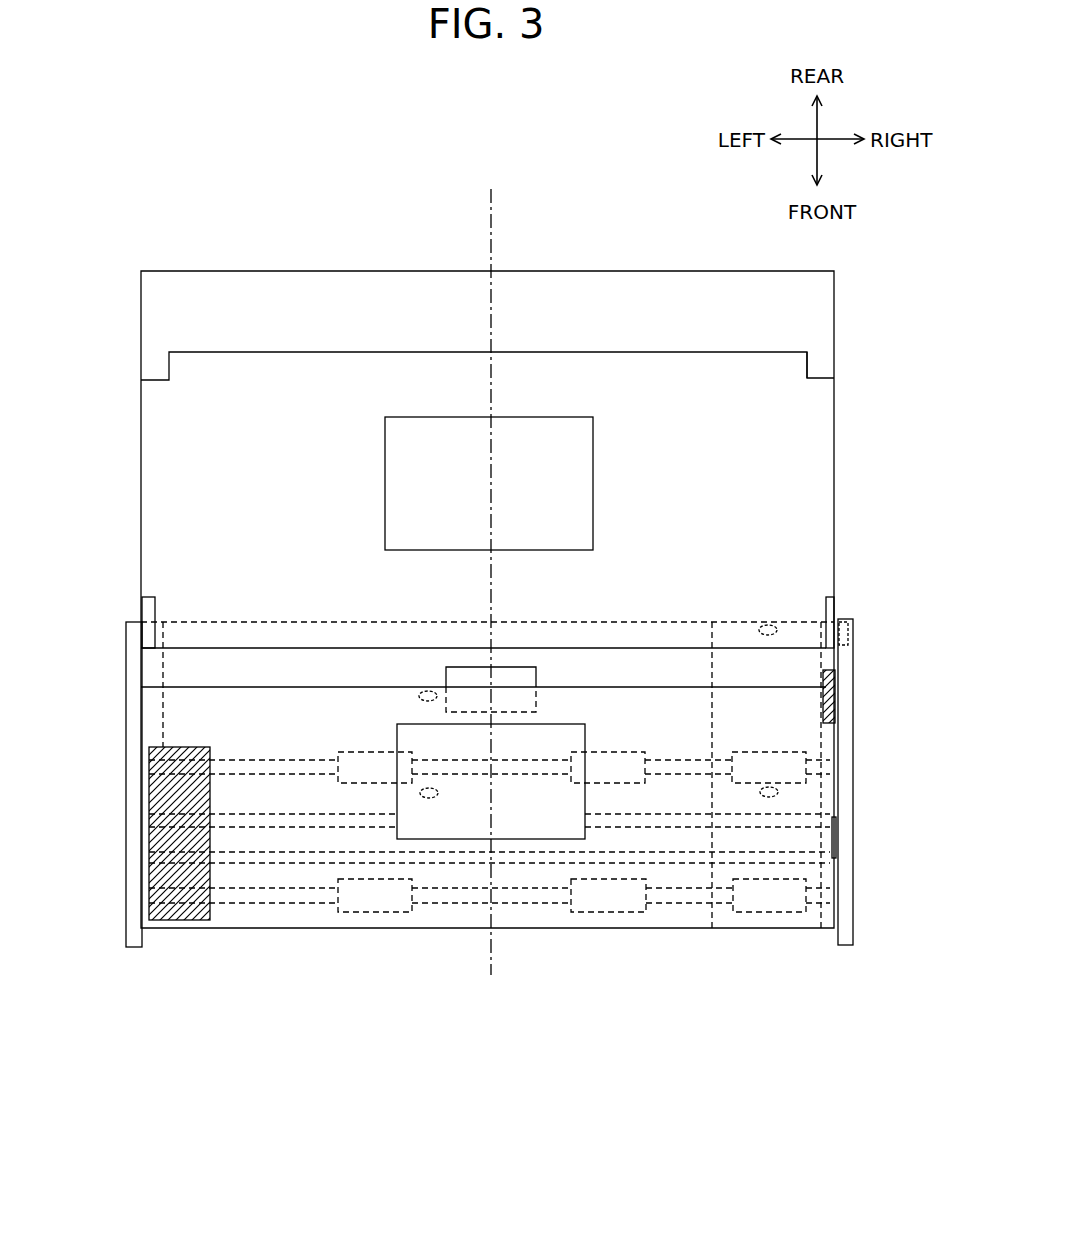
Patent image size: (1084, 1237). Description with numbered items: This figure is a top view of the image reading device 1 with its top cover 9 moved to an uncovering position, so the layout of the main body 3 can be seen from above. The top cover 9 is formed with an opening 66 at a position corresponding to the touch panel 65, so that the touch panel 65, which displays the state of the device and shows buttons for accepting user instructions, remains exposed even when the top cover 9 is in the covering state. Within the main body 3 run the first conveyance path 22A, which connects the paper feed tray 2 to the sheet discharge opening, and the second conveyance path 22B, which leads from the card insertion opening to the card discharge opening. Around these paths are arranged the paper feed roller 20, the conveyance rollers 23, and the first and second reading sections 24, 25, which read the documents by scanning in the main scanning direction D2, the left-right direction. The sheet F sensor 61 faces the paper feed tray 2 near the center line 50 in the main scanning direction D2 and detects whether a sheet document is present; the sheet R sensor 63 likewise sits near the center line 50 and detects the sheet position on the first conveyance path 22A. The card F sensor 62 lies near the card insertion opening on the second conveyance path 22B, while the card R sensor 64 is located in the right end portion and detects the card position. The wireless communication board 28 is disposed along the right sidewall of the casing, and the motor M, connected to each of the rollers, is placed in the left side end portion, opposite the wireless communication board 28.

The image reading device 1 is at (385, 150).
The paper feed tray 2 is at (218, 663).
The main body 3 is at (118, 674).
The top cover 9 is at (803, 441).
The paper feed roller 20 is at (506, 667).
The first conveyance path 22A is at (163, 722).
The second conveyance path 22B is at (822, 737).
The conveyance rollers 23 is at (368, 752).
The first reading section 24 is at (836, 820).
The second reading section 25 is at (836, 858).
The wireless communication board 28 is at (835, 697).
The center line 50 is at (491, 246).
The sheet front sensor 61 is at (428, 690).
The card front sensor 62 is at (775, 626).
The sheet rear sensor 63 is at (418, 796).
The card rear sensor 64 is at (778, 797).
The touch panel 65 is at (532, 839).
The opening 66 is at (562, 422).
The motor M is at (200, 920).
The main scanning direction D2 is at (677, 1033).